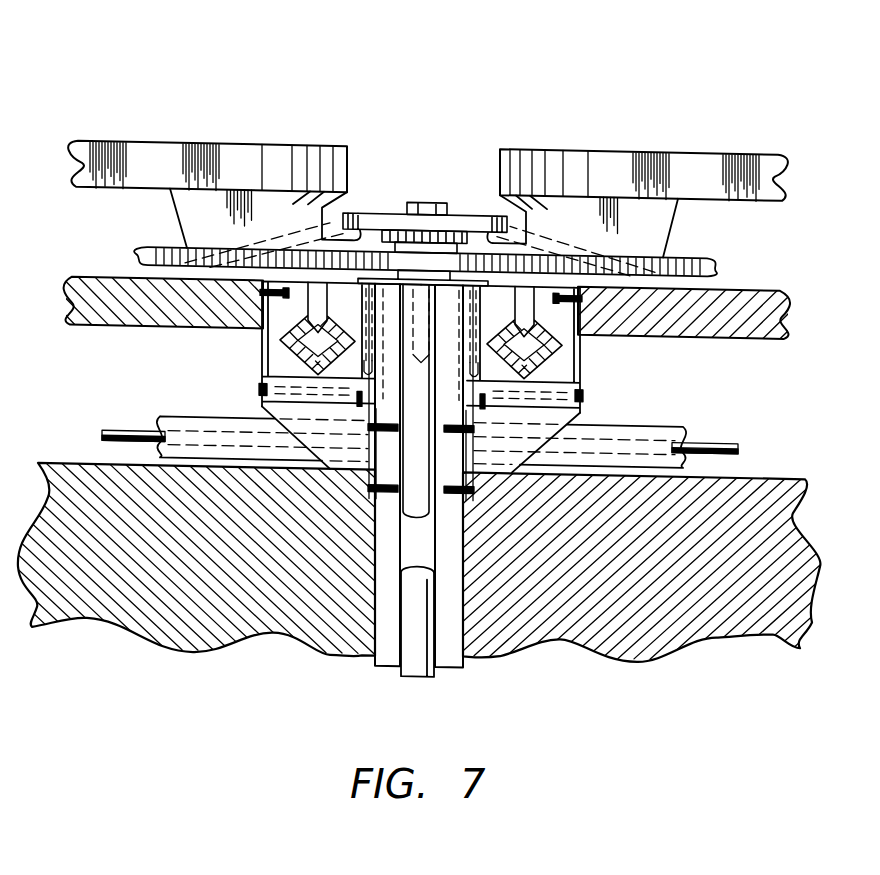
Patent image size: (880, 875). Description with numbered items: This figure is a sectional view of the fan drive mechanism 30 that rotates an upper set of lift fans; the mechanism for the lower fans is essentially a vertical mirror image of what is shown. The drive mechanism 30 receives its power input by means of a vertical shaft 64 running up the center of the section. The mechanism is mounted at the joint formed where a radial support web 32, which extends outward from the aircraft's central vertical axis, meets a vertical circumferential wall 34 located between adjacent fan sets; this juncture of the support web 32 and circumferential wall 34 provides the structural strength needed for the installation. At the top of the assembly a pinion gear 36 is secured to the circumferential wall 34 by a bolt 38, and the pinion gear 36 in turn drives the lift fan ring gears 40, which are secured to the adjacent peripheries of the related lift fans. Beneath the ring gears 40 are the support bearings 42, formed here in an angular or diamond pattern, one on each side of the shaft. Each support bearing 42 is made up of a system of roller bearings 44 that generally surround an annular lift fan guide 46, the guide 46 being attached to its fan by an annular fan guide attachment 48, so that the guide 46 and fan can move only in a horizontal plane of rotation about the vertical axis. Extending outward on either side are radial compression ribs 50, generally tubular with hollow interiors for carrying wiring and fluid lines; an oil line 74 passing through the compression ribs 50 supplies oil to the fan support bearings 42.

The fan drive mechanism 30 is at (437, 165).
The support web 32 is at (120, 632).
The vertical circumferential wall 34 is at (378, 672).
The pinion gear 36 is at (380, 248).
The bolt 38 is at (440, 201).
The lift fan ring gear 40 is at (150, 251).
The support bearing 42 is at (290, 366).
The roller bearing 44 is at (557, 348).
The annular lift fan guide 46 is at (275, 347).
The annular fan guide attachment 48 is at (324, 306).
The radial compression rib 50 is at (171, 421).
The vertical shaft 64 is at (438, 672).
The oil line 74 is at (140, 438).